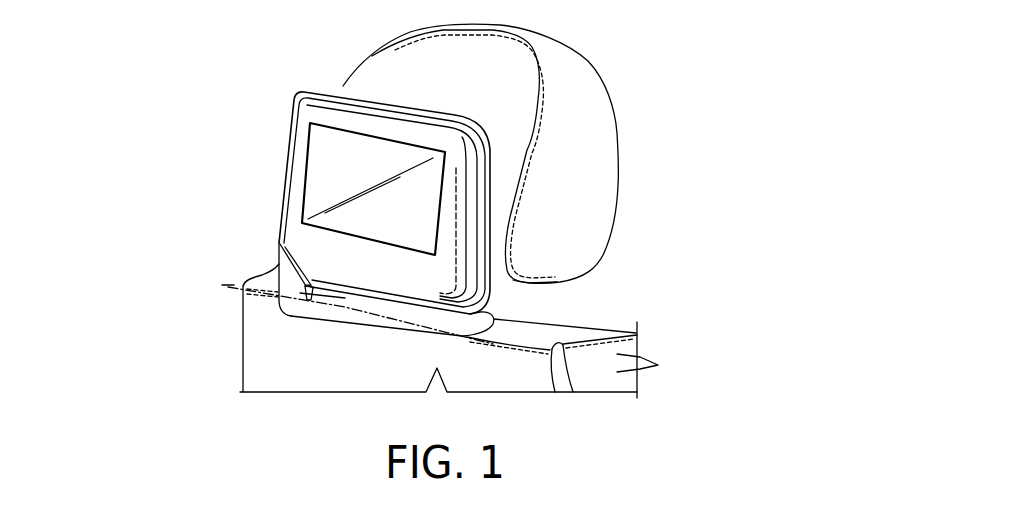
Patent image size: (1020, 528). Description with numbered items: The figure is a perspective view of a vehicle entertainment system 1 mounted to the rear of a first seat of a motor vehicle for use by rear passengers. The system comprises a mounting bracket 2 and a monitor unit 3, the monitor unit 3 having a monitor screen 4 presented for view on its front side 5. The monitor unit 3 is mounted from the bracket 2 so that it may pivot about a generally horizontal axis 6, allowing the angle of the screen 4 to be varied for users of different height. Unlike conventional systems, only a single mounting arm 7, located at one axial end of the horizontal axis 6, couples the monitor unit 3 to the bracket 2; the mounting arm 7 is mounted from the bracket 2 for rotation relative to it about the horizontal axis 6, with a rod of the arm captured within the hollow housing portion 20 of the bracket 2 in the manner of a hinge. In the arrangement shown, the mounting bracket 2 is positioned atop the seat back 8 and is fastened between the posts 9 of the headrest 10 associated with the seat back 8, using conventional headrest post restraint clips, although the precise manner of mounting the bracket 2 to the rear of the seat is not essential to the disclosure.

The vehicle entertainment system 1 is at (259, 63).
The mounting bracket 2 is at (437, 347).
The monitor unit 3 is at (289, 158).
The monitor screen 4 is at (322, 181).
The front side 5 is at (447, 285).
The horizontal axis 6 is at (228, 288).
The mounting arm 7 is at (288, 273).
The seat back 8 is at (593, 337).
The posts 9 is at (493, 297).
The headrest 10 is at (600, 153).
The hollow housing portion 20 is at (352, 313).